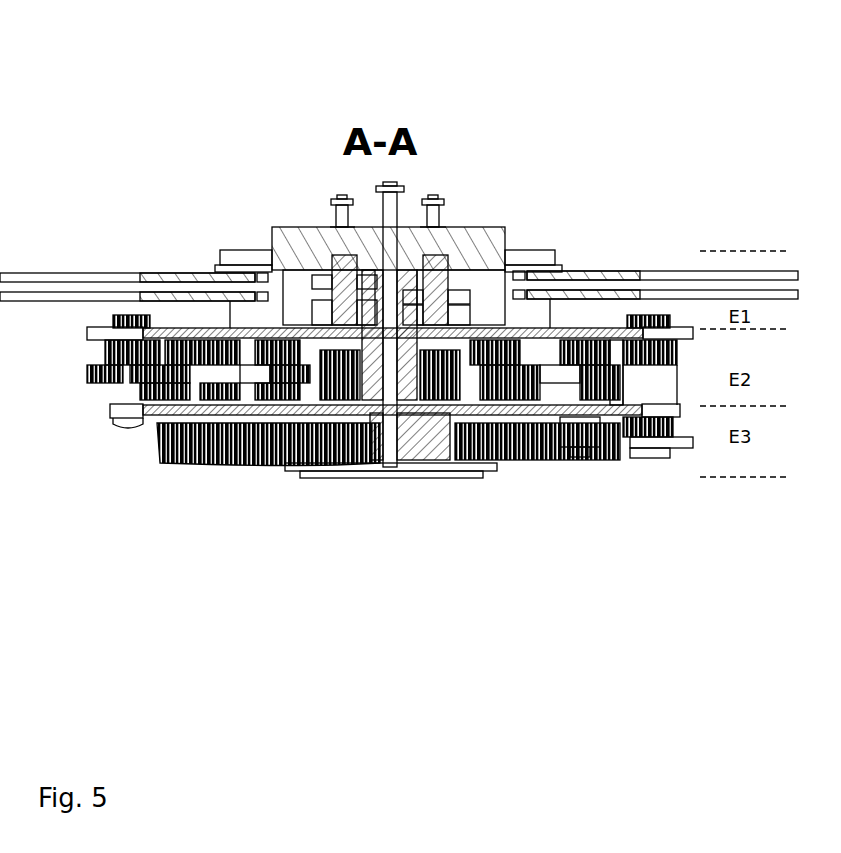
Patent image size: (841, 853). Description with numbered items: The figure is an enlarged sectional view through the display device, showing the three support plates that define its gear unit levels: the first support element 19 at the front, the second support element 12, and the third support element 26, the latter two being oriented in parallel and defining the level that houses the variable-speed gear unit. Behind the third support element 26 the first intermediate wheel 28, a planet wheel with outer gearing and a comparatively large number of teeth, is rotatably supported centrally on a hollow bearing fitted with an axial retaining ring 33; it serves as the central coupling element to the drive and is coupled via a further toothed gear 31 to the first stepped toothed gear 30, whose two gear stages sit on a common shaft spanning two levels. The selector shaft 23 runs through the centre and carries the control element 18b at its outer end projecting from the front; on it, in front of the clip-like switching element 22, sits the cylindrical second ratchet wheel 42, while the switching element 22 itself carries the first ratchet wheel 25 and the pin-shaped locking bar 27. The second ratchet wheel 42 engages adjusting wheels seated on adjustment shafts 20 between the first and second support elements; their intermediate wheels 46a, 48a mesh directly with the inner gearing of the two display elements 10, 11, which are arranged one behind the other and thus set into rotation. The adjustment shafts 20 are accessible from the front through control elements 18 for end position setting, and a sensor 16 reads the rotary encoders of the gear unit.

The display element 10 is at (127, 272).
The display element 11 is at (180, 296).
The second support element 12 is at (235, 425).
The sensor 16 is at (105, 345).
The control element for end position setting/correction 18 is at (342, 199).
The control element of the switching system 18b is at (387, 185).
The first support element 19 is at (283, 232).
The adjustment shaft 20 is at (340, 218).
The switching element 22 is at (470, 360).
The selector shaft 23 is at (398, 212).
The first ratchet wheel 25 is at (457, 400).
The third support element 26 is at (195, 415).
The locking bar 27 is at (440, 375).
The first intermediate wheel 28 is at (158, 460).
The first stepped toothed gear 30 is at (648, 362).
The further toothed gear 31 is at (585, 425).
The axial retaining ring 33 is at (450, 478).
The second ratchet wheel 42 is at (375, 450).
The intermediate wheel 46a is at (470, 268).
The intermediate wheel 48a is at (445, 255).